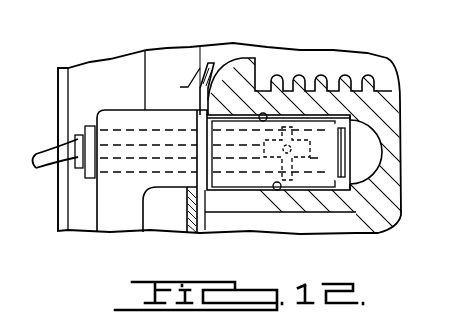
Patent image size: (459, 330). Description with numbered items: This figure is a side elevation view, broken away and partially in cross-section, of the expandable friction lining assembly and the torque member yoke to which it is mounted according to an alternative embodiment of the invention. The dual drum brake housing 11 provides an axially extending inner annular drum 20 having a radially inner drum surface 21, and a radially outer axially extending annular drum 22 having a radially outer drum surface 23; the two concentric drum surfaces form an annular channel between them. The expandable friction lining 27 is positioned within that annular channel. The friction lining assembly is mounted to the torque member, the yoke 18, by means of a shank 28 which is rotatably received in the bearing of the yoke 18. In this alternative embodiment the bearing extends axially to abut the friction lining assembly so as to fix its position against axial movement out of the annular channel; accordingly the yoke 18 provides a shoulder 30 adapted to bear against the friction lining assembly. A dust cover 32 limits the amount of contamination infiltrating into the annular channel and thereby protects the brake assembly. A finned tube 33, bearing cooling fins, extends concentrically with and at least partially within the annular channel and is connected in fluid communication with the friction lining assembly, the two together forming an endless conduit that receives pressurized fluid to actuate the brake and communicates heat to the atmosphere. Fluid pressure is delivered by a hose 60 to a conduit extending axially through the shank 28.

The dual drum brake housing 11 is at (318, 205).
The yoke 18 is at (110, 227).
The inner annular drum 20 is at (233, 203).
The radially inner drum surface 21 is at (280, 190).
The outer annular drum 22 is at (307, 102).
The radially outer drum surface 23 is at (262, 114).
The expandable friction lining 27 is at (318, 122).
The shank 28 is at (348, 190).
The shoulder 30 is at (199, 108).
The dust cover 32 is at (205, 62).
The finned tube 33 is at (340, 150).
The hose 60 is at (41, 150).